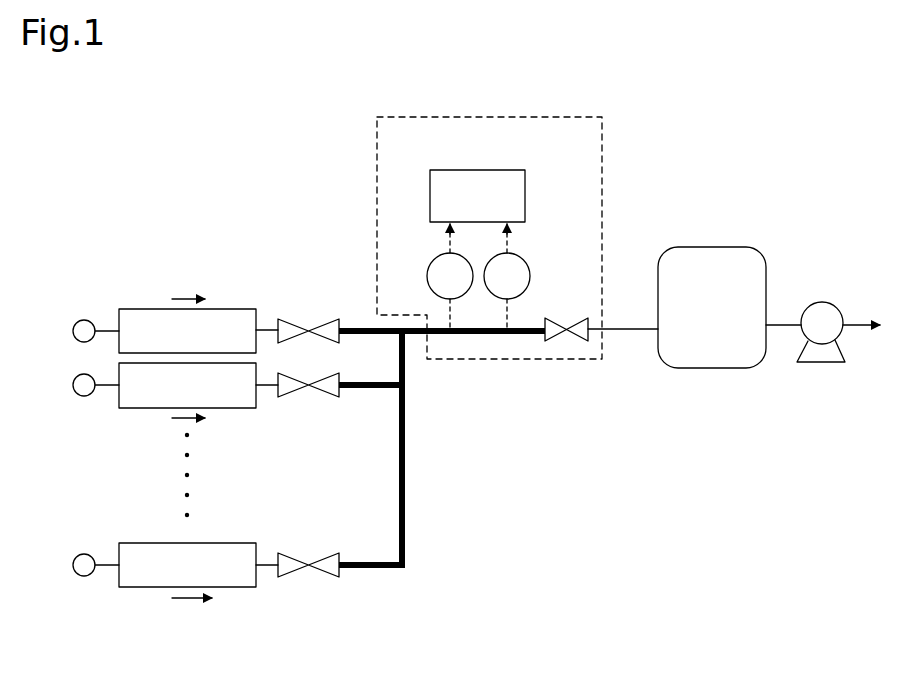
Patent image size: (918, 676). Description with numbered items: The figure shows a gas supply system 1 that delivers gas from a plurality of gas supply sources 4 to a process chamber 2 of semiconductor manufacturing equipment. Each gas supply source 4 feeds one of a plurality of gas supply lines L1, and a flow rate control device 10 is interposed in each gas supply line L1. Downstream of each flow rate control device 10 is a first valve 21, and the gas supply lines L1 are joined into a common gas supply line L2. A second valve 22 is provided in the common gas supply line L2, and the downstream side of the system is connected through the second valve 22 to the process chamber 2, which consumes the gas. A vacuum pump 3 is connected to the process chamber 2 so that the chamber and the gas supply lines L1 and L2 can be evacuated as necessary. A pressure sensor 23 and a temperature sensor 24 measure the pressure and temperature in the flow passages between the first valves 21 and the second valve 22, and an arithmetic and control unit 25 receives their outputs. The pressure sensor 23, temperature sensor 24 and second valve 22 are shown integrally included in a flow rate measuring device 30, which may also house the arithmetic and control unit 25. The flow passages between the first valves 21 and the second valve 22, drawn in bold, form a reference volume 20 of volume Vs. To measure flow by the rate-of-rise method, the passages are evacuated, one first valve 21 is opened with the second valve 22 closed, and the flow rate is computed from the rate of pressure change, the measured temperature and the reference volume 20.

The gas supply system 1 is at (240, 188).
The process chamber 2 is at (710, 368).
The vacuum pump 3 is at (818, 363).
The gas supply source 4 is at (90, 320).
The flow rate control device 10 is at (151, 309).
The reference volume 20 is at (406, 490).
The first valve 21 is at (308, 331).
The second valve 22 is at (566, 329).
The pressure sensor 23 is at (530, 262).
The temperature sensor 24 is at (430, 262).
The arithmetic and control unit 25 is at (481, 170).
The flow rate measuring device 30 is at (606, 168).
The gas supply line L1 is at (381, 568).
The common gas supply line L2 is at (478, 334).